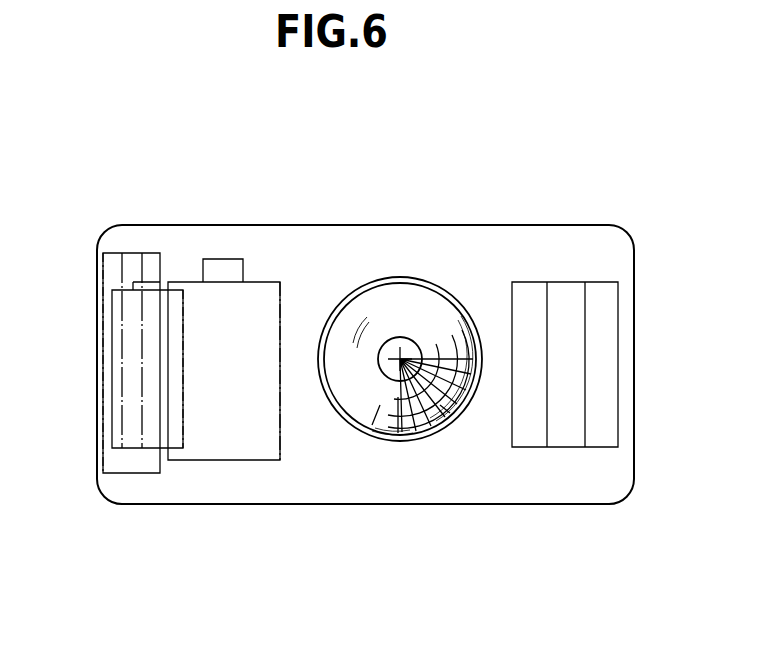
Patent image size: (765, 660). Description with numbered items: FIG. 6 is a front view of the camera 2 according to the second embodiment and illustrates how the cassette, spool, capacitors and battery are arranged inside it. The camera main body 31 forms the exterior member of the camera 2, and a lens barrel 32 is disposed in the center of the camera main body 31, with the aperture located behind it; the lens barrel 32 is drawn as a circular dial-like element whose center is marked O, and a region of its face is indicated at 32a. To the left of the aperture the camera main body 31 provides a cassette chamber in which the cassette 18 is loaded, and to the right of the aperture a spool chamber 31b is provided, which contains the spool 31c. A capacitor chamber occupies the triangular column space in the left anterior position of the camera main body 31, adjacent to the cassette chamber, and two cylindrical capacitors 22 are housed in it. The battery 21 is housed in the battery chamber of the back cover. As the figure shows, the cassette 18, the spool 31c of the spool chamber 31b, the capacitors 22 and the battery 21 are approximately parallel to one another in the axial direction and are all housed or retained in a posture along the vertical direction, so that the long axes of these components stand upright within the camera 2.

The camera 2 is at (583, 165).
The cassette 18 is at (268, 280).
The battery 21 is at (112, 415).
The capacitors 22 is at (150, 252).
The camera main body 31 is at (492, 504).
The spool chamber 31b is at (527, 280).
The spool 31c is at (585, 320).
The lens barrel 32 is at (425, 287).
The dial surface 32a is at (377, 308).
The dial center O is at (400, 359).